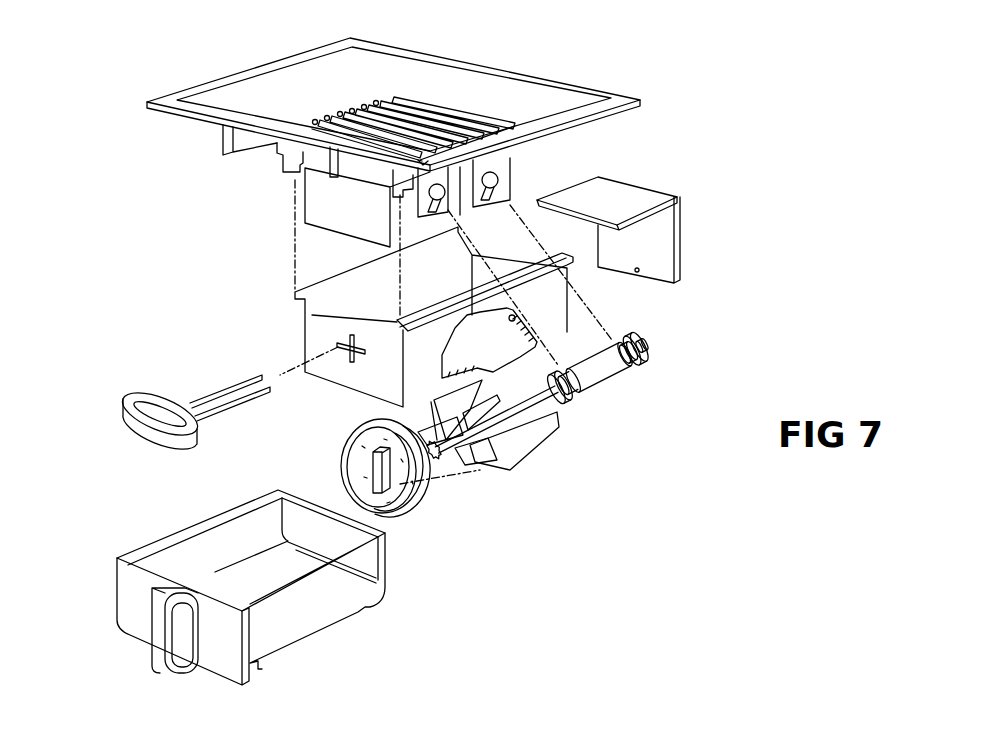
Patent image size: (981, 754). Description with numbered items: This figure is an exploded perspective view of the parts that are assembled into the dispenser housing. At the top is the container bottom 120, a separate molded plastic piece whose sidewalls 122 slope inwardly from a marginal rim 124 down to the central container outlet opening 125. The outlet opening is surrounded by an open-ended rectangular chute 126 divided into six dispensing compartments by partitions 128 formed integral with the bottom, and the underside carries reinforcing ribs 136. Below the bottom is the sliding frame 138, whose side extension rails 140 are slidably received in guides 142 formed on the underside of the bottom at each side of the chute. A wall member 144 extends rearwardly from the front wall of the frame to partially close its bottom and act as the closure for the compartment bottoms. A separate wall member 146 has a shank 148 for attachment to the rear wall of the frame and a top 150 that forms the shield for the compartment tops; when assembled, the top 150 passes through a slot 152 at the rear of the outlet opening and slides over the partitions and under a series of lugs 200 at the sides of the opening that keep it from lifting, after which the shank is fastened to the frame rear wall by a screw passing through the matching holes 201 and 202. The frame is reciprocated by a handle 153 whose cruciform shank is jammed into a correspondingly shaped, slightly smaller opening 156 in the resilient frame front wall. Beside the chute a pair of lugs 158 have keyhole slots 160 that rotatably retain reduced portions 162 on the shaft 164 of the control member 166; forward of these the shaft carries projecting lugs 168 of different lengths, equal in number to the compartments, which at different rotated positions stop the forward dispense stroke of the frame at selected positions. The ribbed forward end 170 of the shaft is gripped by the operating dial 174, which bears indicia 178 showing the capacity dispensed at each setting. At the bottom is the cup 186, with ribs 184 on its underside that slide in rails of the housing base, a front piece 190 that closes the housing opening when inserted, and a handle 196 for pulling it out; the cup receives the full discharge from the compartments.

The container bottom 120 is at (548, 76).
The sidewalls 122 is at (398, 72).
The marginal rim 124 is at (293, 58).
The container outlet opening 125 is at (452, 128).
The chute 126 is at (317, 220).
The partitions 128 is at (390, 117).
The reinforcing ribs 136 is at (227, 150).
The sliding frame 138 is at (348, 389).
The side extension rails 140 is at (430, 307).
The guides 142 is at (282, 168).
The wall member 144 is at (453, 367).
The wall member 146 is at (679, 194).
The shank 148 is at (680, 260).
The top 150 is at (602, 200).
The slot 152 is at (450, 130).
The handle 153 is at (153, 392).
The opening 156 is at (340, 348).
The lugs 158 is at (450, 213).
The keyhole slots 160 is at (452, 221).
The reduced portions 162 is at (625, 370).
The shaft 164 is at (592, 357).
The control member 166 is at (542, 458).
The projecting lugs 168 is at (512, 460).
The forward end 170 is at (430, 478).
The operating dial 174 is at (340, 460).
The indicia 178 is at (400, 495).
The ribs 184 is at (303, 645).
The cup 186 is at (158, 538).
The front piece 190 is at (125, 587).
The handle 196 is at (160, 647).
The lugs 200 is at (348, 113).
The hole 201 is at (572, 297).
The hole 202 is at (638, 275).